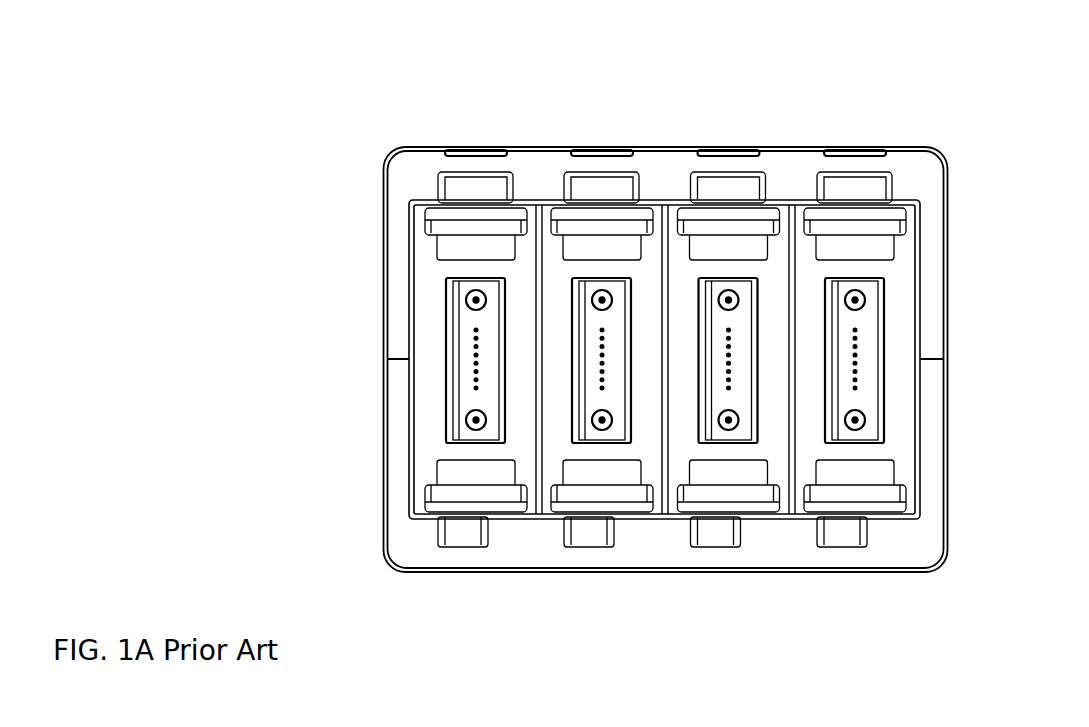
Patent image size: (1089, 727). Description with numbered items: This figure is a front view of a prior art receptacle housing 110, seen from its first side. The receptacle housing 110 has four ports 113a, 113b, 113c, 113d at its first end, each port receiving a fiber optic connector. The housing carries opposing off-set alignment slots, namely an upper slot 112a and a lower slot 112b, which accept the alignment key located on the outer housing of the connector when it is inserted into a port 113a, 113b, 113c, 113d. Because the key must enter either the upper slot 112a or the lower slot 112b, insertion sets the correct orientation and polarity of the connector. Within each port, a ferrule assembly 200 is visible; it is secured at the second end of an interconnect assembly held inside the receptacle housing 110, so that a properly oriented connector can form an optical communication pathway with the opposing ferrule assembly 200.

The receptacle housing 110 is at (363, 184).
The upper slot 112a is at (730, 186).
The lower slot 112b is at (850, 544).
The port 113a is at (466, 500).
The port 113b is at (605, 467).
The port 113c is at (738, 472).
The port 113d is at (867, 260).
The ferrule assembly 200 is at (878, 351).